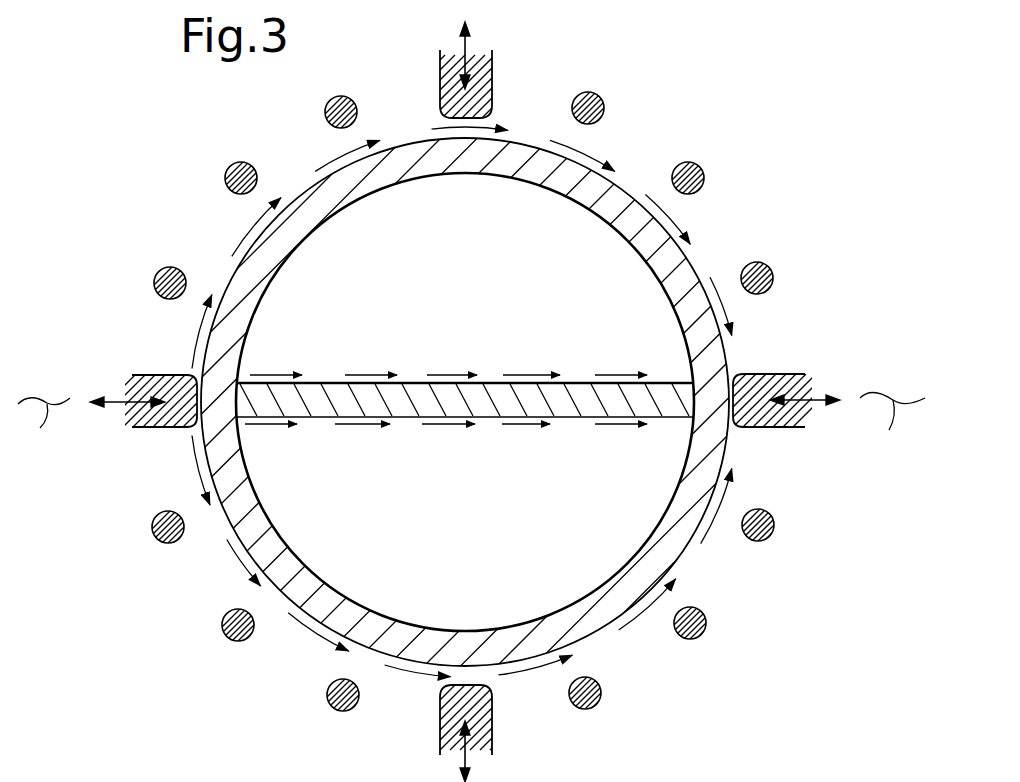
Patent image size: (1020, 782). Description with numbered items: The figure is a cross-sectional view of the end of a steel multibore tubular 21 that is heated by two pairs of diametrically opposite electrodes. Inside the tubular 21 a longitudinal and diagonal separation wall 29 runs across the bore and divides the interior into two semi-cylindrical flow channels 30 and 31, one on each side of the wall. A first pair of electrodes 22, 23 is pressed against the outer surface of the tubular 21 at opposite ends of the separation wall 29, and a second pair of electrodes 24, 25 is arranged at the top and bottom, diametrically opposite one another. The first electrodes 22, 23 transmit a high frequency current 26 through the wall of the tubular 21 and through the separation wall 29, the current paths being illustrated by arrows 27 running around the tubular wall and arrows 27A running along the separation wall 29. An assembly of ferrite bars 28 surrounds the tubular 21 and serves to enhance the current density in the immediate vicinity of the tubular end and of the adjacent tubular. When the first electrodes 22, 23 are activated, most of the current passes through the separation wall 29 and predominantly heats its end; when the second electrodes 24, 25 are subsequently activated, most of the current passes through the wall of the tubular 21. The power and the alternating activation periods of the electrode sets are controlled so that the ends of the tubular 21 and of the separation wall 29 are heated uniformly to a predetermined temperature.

The steel multibore tubular 21 is at (622, 250).
The first electrode 22 is at (147, 430).
The first electrode 23 is at (797, 428).
The second electrode 24 is at (440, 738).
The second electrode 25 is at (493, 67).
The high frequency current 26 is at (471, 428).
The arrows illustrating current flow 27 is at (195, 343).
The arrows illustrating current flow 27A is at (275, 376).
The ferrite bars 28 is at (160, 271).
The separation wall 29 is at (447, 421).
The flow channel 30 is at (477, 312).
The flow channel 31 is at (480, 548).